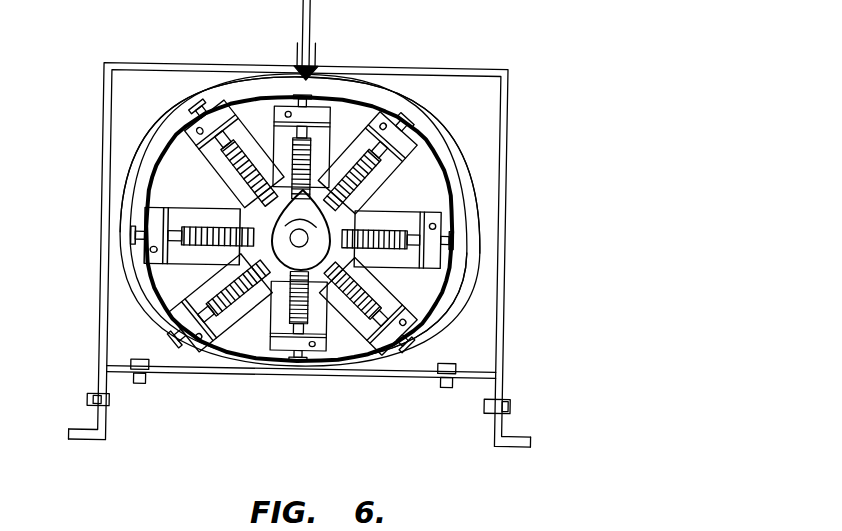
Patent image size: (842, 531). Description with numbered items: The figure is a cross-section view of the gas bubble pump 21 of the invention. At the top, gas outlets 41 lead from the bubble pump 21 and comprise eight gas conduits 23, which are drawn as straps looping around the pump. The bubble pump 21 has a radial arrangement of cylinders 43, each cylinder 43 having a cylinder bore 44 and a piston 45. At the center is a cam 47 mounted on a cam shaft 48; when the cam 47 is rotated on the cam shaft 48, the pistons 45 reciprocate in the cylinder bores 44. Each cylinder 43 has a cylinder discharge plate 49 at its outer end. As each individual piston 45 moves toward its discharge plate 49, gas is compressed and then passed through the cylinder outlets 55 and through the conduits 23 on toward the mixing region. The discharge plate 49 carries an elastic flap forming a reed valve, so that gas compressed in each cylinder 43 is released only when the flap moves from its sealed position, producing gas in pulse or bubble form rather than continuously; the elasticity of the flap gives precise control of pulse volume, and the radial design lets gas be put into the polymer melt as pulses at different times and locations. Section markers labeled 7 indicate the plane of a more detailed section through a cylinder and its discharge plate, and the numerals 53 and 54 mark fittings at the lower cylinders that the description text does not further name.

The bubble pump 21 is at (683, 172).
The gas outlets 41 is at (306, 22).
The cylinders 43 is at (438, 176).
The cylinder bore 44 is at (442, 233).
The pistons 45 is at (275, 195).
The cam 47 is at (305, 250).
The cam shaft 48 is at (291, 243).
The cylinder discharge plate 49 is at (188, 162).
The cylinder end fitting 53 is at (243, 362).
The cylinder end fitting 54 is at (394, 345).
The cylinder outlets 55 is at (400, 340).
The gas conduits 23 is at (465, 293).
The section line 7- 7 is at (393, 289).